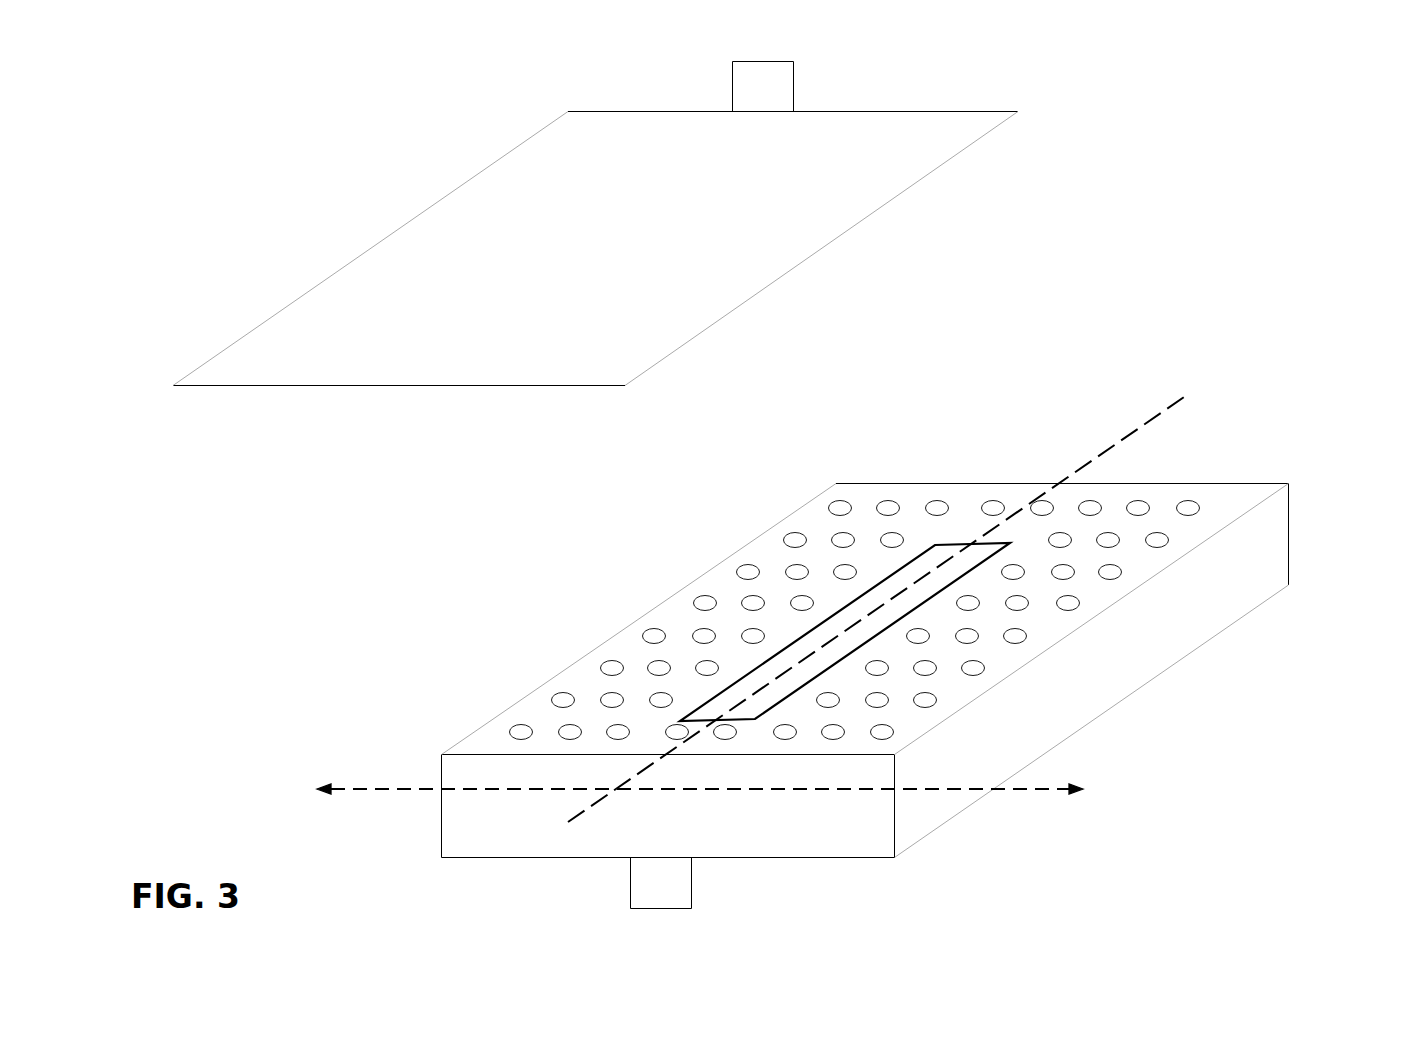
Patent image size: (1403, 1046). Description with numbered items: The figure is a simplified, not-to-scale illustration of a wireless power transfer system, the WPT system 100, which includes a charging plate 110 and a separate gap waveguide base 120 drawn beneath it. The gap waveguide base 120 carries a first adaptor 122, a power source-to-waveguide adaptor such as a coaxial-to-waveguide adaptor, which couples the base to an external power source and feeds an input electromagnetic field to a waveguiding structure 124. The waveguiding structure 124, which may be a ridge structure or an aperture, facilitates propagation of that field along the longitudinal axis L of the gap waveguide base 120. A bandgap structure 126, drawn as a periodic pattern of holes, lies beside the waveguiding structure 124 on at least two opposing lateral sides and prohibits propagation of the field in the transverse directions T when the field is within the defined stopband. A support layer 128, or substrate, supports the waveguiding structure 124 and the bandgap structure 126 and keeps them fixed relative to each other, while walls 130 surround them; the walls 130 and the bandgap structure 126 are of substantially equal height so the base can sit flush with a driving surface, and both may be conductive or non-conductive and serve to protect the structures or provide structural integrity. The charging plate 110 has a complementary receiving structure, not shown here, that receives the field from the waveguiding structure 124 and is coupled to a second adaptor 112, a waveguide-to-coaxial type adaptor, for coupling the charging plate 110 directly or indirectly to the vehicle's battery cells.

The WPT system 100 is at (259, 96).
The charging plate 110 is at (572, 300).
The second adaptor 112 is at (763, 62).
The gap waveguide base 120 is at (527, 677).
The first adaptor 122 is at (662, 883).
The waveguiding structure 124 is at (917, 572).
The bandgap structure 126 is at (795, 633).
The support layer 128 is at (852, 857).
The walls 130 is at (1262, 560).
The longitudinal axis L is at (1110, 448).
The transverse directions T is at (1033, 790).